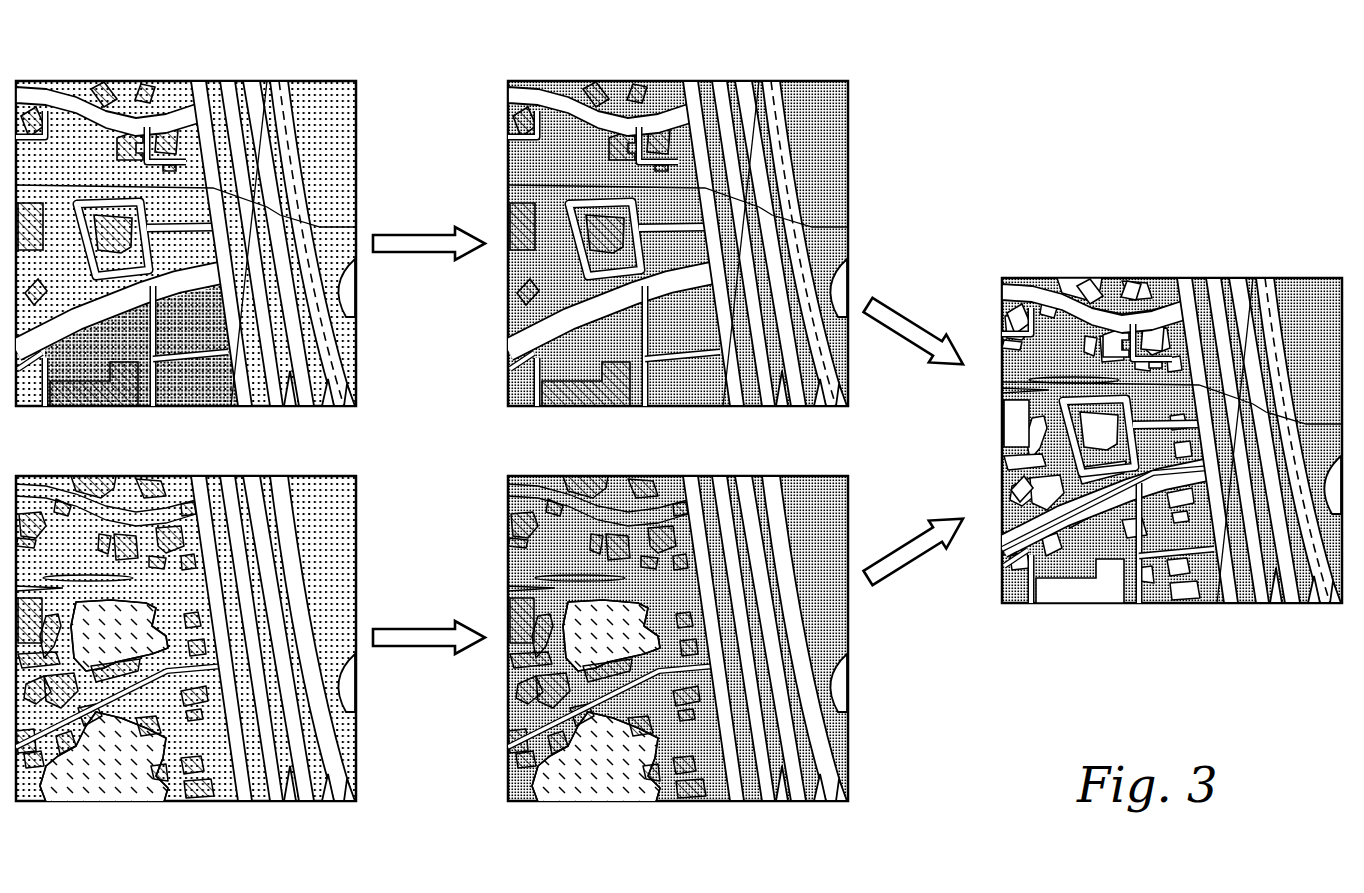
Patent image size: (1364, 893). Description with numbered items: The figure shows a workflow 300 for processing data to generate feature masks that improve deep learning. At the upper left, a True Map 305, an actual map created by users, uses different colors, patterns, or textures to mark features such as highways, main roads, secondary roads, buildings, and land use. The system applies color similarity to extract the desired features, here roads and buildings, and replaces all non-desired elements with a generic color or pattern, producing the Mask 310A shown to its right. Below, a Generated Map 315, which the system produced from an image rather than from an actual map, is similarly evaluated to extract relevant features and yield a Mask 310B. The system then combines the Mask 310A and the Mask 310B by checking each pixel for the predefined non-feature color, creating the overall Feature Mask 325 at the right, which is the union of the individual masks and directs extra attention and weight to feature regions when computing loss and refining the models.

The workflow 300 is at (1222, 73).
The True Map 305 is at (96, 80).
The Mask 310A is at (612, 80).
The Generated Map 315 is at (96, 475).
The Mask 310B is at (614, 475).
The Feature Mask 325 is at (1082, 278).